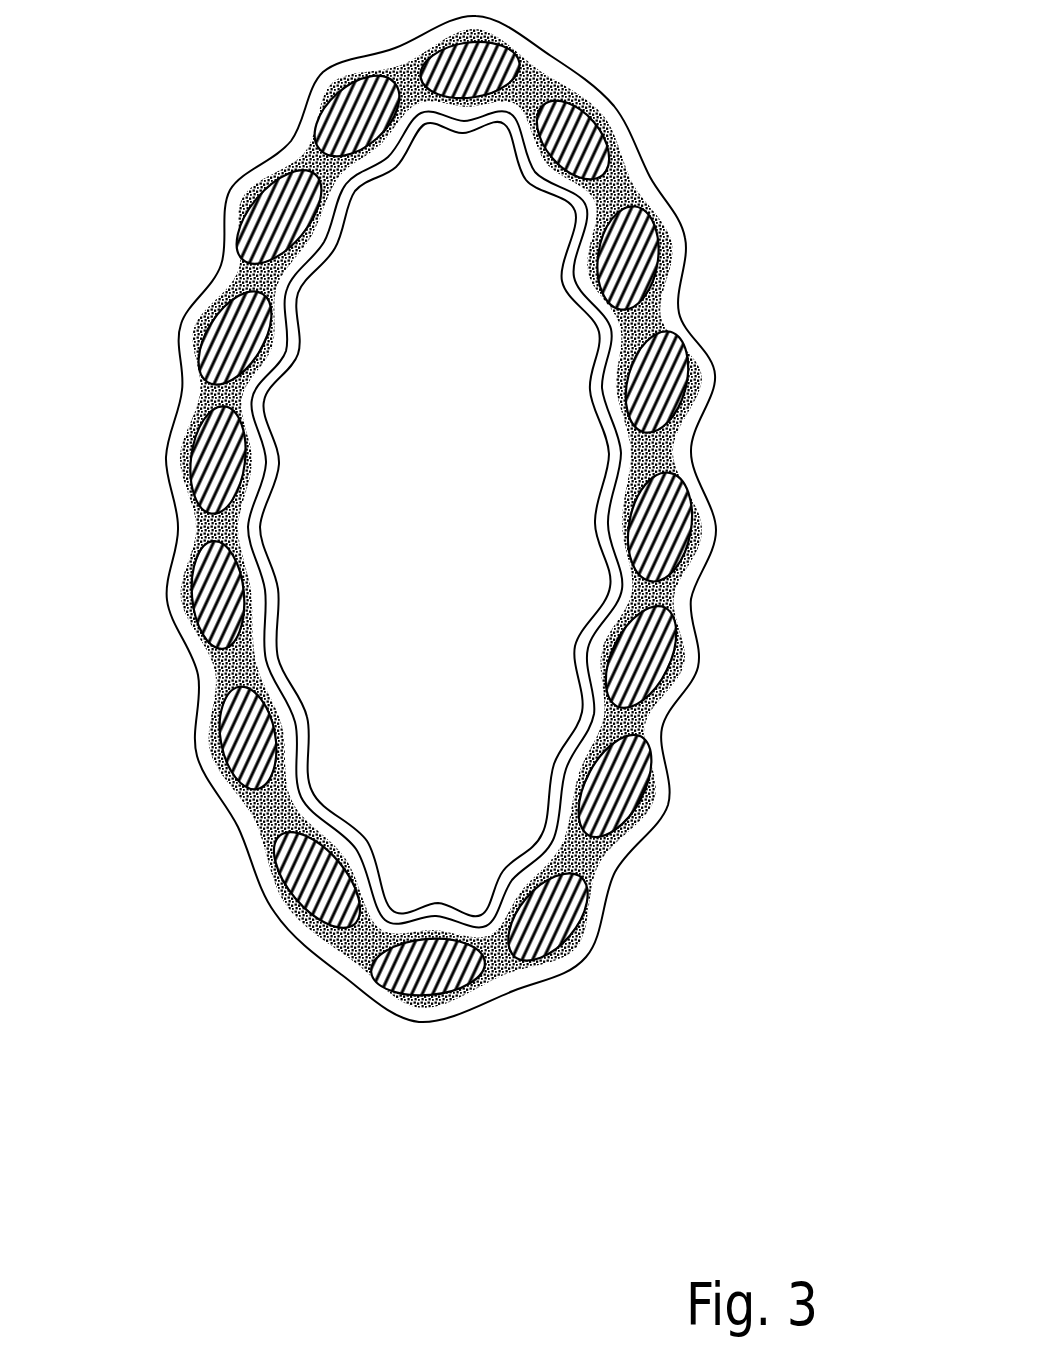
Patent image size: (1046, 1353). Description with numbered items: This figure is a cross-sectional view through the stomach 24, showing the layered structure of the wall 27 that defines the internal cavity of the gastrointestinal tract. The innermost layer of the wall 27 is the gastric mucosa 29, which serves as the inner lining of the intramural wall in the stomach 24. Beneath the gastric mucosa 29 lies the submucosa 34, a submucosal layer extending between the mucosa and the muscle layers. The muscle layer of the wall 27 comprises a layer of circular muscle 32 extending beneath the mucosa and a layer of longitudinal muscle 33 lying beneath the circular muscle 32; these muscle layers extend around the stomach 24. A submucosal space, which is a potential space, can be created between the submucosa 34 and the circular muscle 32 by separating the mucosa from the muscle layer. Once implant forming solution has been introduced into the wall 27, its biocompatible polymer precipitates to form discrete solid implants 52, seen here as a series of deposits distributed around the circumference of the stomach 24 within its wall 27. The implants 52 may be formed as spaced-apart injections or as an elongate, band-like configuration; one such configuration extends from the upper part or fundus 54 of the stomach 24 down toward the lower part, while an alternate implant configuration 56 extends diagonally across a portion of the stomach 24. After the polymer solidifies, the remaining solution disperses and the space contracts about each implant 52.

The stomach 24 is at (414, 546).
The wall 27 is at (306, 676).
The gastric mucosa 29 is at (435, 519).
The circular muscle 32 is at (615, 336).
The longitudinal muscle 33 is at (383, 523).
The submucosa 34 is at (264, 623).
The implant 52 is at (342, 98).
The fundus 54 is at (593, 76).
The implant configuration 56 is at (597, 970).